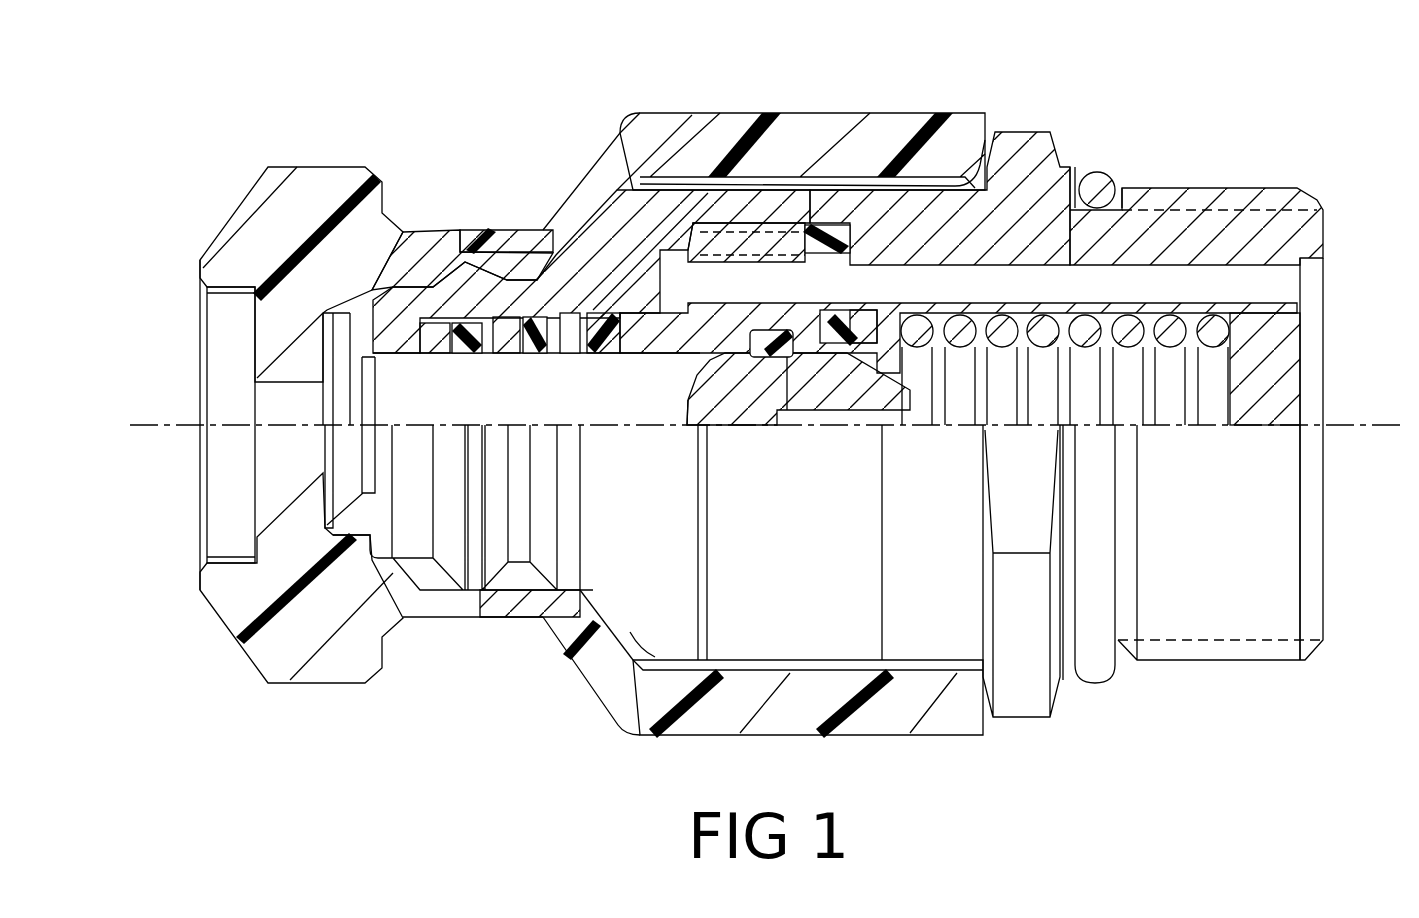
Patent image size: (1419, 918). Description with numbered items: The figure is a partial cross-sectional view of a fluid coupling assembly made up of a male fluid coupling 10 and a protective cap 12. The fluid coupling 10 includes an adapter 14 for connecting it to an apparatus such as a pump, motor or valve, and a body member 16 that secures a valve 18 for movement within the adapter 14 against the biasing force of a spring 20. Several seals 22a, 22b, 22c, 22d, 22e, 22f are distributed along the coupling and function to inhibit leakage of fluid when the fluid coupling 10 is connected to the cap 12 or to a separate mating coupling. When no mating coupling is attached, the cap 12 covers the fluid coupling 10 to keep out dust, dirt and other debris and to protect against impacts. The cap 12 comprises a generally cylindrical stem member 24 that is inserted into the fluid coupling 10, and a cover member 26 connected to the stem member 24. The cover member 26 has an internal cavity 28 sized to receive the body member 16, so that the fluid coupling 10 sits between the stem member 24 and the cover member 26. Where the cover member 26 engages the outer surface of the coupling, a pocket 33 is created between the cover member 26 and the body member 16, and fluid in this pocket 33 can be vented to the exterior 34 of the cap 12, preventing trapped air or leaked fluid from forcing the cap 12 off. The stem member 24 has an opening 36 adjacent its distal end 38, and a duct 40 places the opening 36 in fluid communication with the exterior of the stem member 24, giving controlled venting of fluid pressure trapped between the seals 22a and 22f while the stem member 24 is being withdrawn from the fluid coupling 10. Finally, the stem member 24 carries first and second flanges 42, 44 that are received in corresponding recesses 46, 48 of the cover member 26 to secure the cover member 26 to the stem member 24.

The fluid coupling 10 is at (1255, 180).
The cap 12 is at (222, 203).
The adapter 14 is at (1040, 153).
The body member 16 is at (452, 262).
The valve 18 is at (663, 333).
The spring 20 is at (1220, 337).
The seal 22a is at (465, 350).
The seal 22b is at (556, 250).
The seal 22c is at (600, 315).
The seal 22d is at (825, 226).
The seal 22e is at (842, 312).
The seal 22f is at (772, 330).
The stem member 24 is at (200, 489).
The cover member 26 is at (322, 180).
The internal cavity 28 is at (430, 257).
The pocket 33 is at (421, 570).
The exterior 34 is at (847, 113).
The opening 36 is at (852, 425).
The distal end 38 is at (985, 395).
The duct 40 is at (747, 423).
The first flange 42 is at (228, 358).
The second flange 44 is at (323, 533).
The recess 46 is at (232, 557).
The recess 48 is at (345, 335).